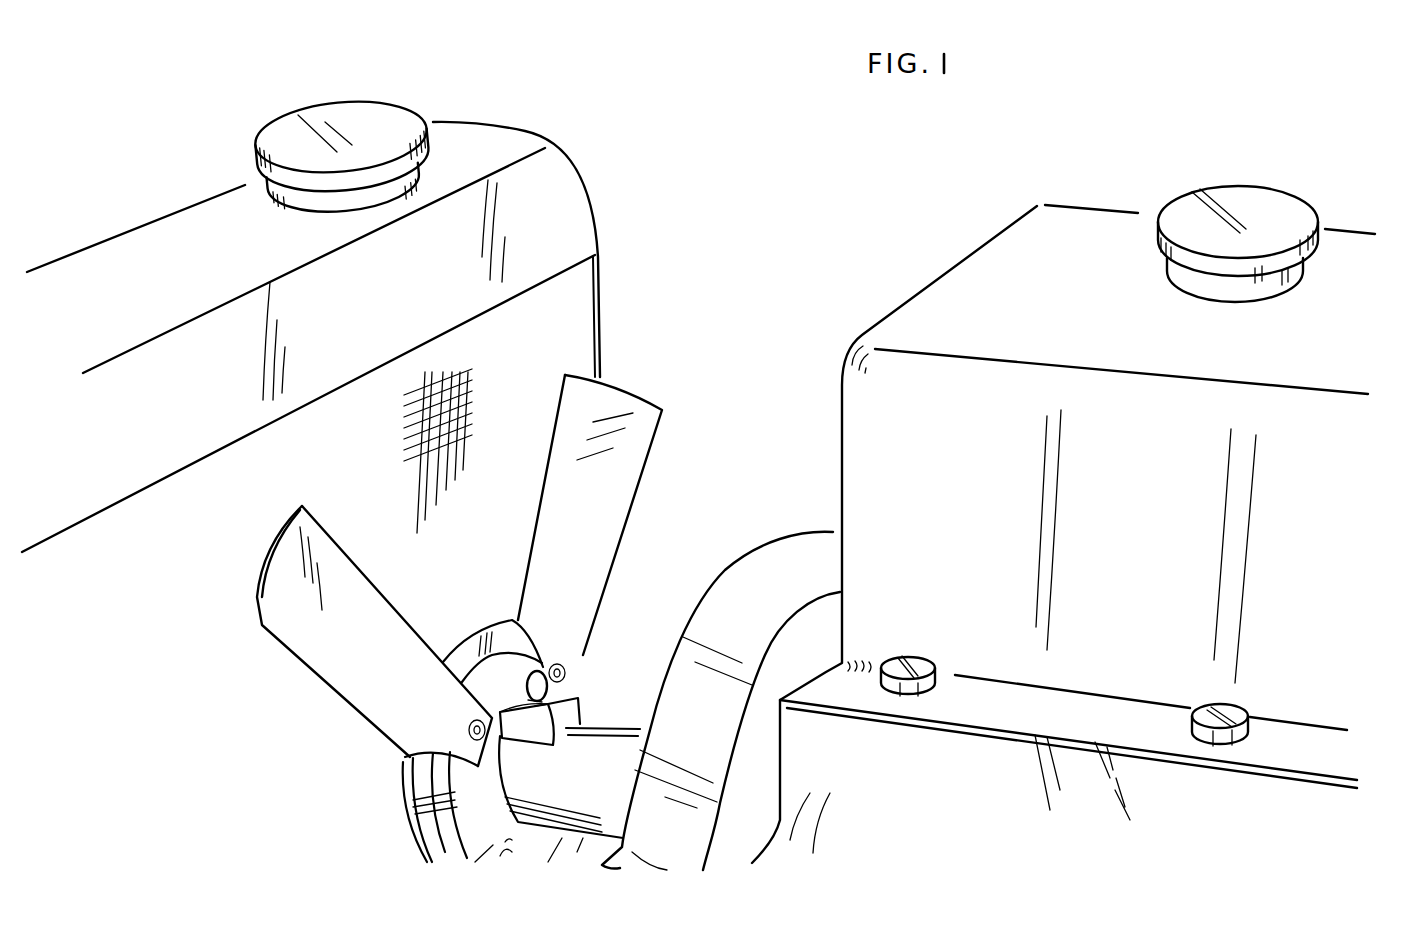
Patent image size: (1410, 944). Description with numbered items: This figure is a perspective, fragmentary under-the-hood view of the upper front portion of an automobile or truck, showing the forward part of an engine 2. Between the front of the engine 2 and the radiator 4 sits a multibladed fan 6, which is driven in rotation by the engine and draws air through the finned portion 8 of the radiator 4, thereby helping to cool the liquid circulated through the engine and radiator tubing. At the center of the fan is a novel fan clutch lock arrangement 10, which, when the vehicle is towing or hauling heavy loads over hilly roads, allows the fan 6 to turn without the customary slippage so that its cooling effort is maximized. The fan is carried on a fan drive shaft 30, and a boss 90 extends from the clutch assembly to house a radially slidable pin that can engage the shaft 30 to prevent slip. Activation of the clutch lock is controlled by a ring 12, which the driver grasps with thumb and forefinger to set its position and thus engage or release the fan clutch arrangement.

The engine 2 is at (885, 778).
The radiator 4 is at (567, 178).
The multibladed fan 6 is at (635, 405).
The finned portion 8 is at (580, 318).
The fan clutch lock arrangement 10 is at (650, 584).
The ring 12 is at (542, 657).
The fan drive shaft 30 is at (603, 777).
The boss 90 is at (578, 716).